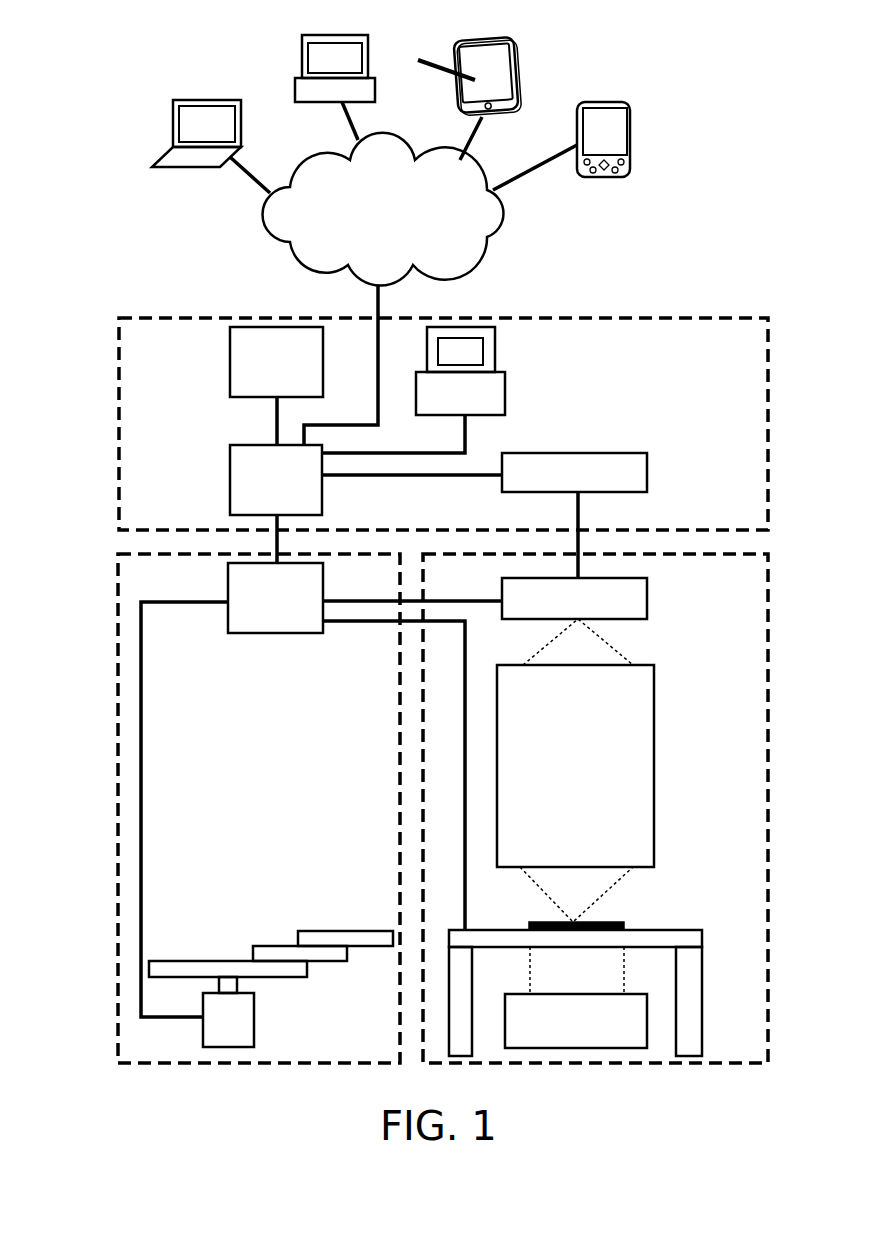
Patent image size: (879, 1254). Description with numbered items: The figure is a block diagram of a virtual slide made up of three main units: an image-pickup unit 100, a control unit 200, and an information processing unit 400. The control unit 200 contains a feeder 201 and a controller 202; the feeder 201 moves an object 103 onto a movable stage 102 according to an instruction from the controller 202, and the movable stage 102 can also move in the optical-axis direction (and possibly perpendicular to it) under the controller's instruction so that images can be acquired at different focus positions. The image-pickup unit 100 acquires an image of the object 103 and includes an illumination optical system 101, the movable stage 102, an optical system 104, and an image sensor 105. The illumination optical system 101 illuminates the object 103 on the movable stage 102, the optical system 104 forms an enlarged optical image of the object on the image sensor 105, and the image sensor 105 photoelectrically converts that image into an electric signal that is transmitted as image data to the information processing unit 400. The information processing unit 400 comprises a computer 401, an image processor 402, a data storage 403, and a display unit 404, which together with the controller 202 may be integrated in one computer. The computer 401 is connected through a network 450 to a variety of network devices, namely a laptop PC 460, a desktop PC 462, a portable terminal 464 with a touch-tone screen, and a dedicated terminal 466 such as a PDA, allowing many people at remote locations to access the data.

The image-pickup unit 100 is at (768, 606).
The illumination optical system 101 is at (595, 1049).
The movable stage 102 is at (702, 993).
The object 103 is at (625, 922).
The optical system 104 is at (655, 745).
The image sensor 105 is at (648, 600).
The control unit 200 is at (118, 633).
The feeder 201 is at (255, 1025).
The controller 202 is at (253, 633).
The information processing unit 400 is at (119, 420).
The computer 401 is at (230, 463).
The image processor 402 is at (625, 453).
The data storage 403 is at (230, 383).
The display unit 404 is at (506, 398).
The network 450 is at (497, 232).
The laptop PC 460 is at (172, 115).
The desktop PC 462 is at (302, 72).
The portable terminal 464 is at (517, 82).
The dedicated terminal 466 is at (630, 110).